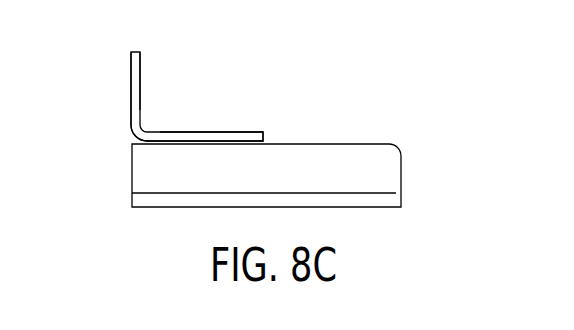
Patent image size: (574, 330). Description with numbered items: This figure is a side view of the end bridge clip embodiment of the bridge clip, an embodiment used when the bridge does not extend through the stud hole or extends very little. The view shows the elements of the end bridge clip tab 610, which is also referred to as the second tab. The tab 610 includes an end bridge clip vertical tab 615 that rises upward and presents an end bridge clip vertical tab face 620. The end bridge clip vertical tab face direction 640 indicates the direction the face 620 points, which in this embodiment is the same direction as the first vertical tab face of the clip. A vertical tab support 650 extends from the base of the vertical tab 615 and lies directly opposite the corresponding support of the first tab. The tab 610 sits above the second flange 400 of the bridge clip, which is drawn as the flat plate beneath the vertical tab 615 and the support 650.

The second flange 400 is at (426, 169).
The end bridge clip tab 610 is at (220, 77).
The end bridge clip vertical tab 615 is at (156, 68).
The end bridge clip vertical tab face 620 is at (120, 108).
The end bridge clip vertical tab face direction 640 is at (110, 88).
The vertical tab support 650 is at (254, 120).